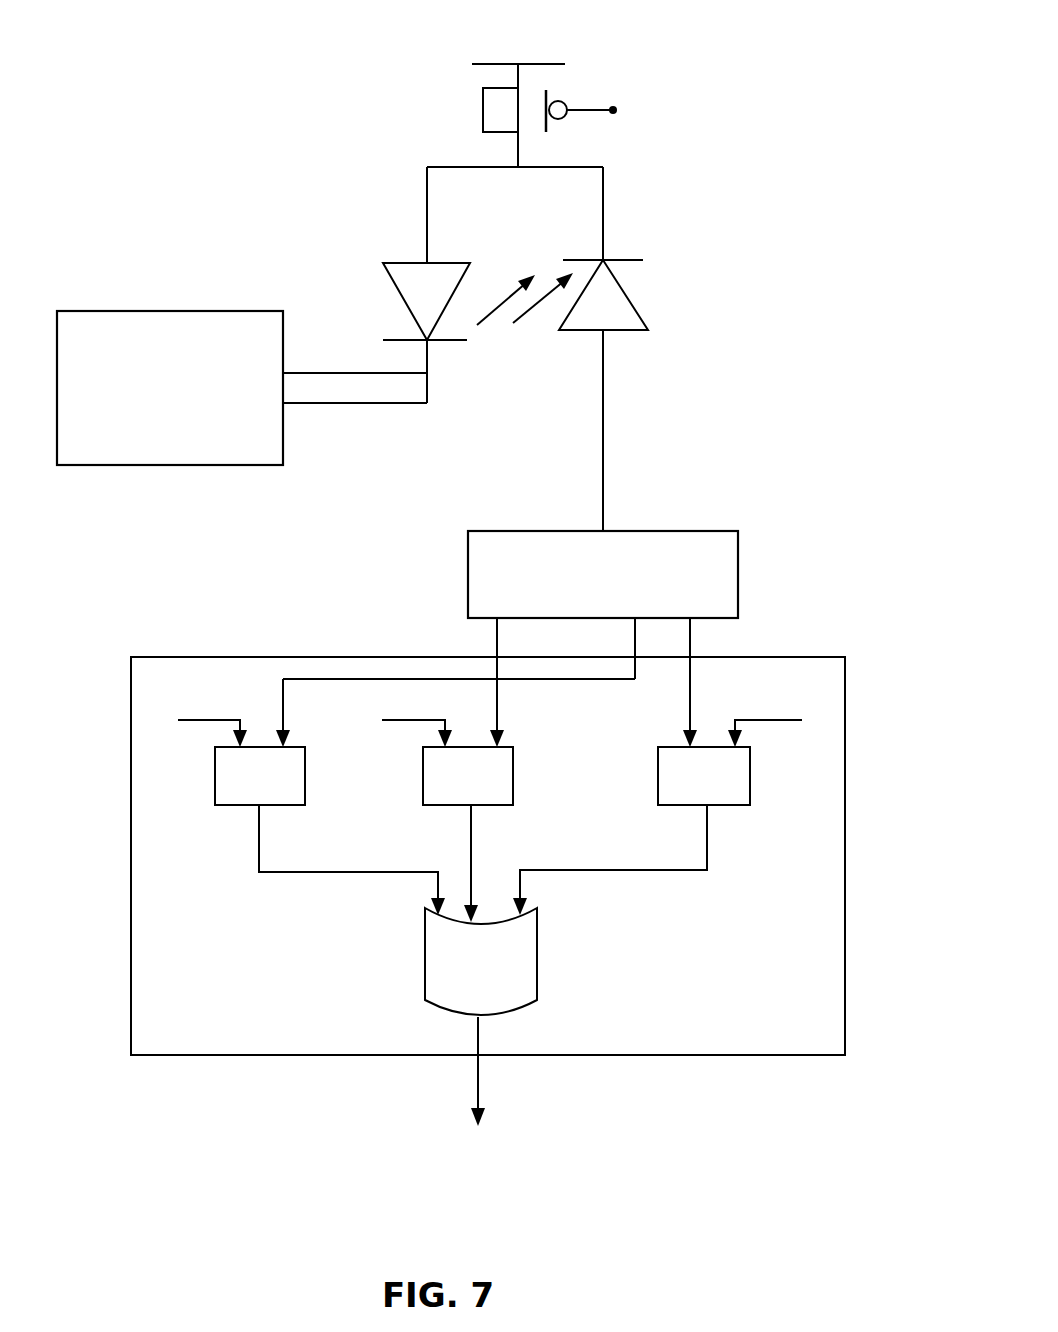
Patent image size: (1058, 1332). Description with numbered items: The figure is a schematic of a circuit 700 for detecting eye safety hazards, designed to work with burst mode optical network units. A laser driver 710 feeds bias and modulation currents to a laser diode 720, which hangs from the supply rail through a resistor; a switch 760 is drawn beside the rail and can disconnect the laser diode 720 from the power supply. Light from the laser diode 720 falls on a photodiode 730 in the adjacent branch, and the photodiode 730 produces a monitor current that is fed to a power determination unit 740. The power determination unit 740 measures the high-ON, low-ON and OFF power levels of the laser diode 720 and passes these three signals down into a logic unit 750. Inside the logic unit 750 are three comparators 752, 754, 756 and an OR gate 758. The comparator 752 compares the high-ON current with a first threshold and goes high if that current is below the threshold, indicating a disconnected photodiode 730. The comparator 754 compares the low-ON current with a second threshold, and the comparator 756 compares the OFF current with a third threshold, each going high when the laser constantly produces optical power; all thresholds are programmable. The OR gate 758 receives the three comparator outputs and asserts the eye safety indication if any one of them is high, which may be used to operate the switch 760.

The circuit 700 is at (838, 30).
The laser driver 710 is at (98, 311).
The laser diode 720 is at (407, 262).
The photodiode 730 is at (618, 258).
The power determination unit 740 is at (682, 531).
The logic unit 750 is at (143, 657).
The comparator 752 is at (657, 755).
The comparator 754 is at (422, 768).
The comparator 756 is at (213, 768).
The OR gate 758 is at (422, 943).
The switch 760 is at (585, 112).